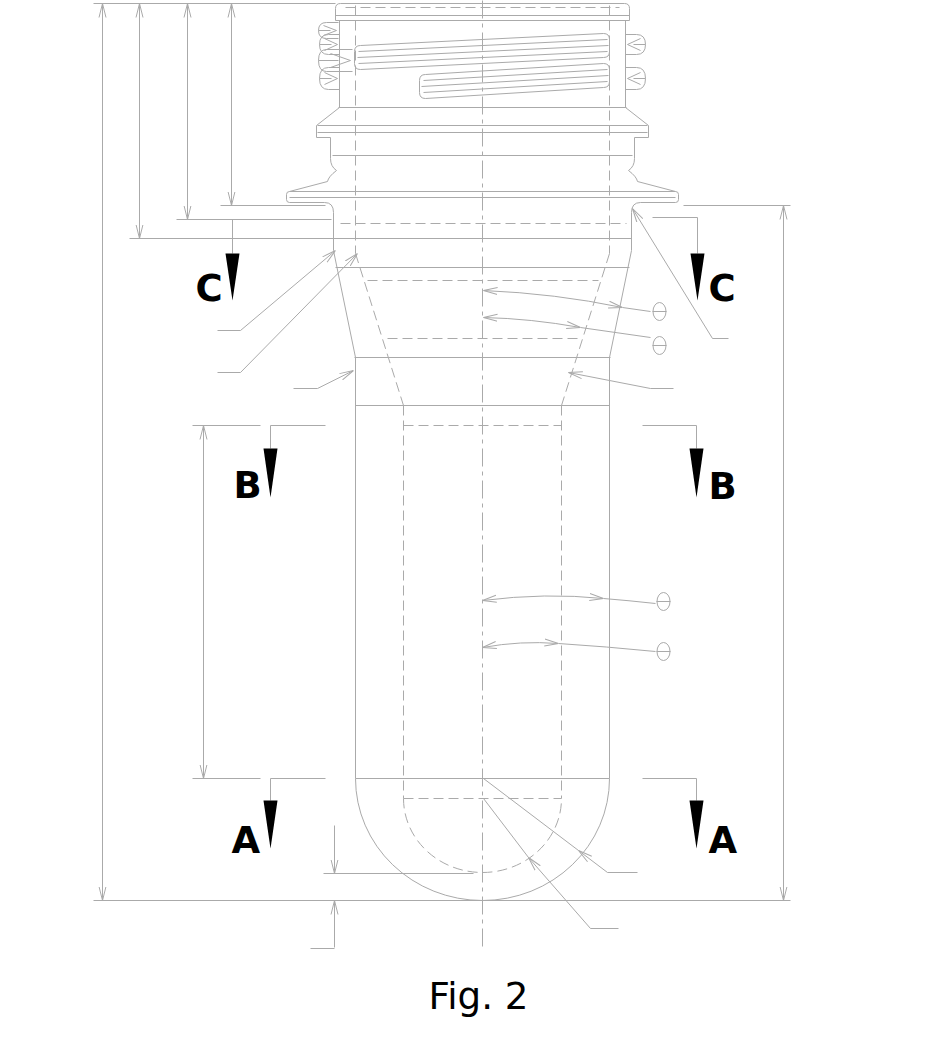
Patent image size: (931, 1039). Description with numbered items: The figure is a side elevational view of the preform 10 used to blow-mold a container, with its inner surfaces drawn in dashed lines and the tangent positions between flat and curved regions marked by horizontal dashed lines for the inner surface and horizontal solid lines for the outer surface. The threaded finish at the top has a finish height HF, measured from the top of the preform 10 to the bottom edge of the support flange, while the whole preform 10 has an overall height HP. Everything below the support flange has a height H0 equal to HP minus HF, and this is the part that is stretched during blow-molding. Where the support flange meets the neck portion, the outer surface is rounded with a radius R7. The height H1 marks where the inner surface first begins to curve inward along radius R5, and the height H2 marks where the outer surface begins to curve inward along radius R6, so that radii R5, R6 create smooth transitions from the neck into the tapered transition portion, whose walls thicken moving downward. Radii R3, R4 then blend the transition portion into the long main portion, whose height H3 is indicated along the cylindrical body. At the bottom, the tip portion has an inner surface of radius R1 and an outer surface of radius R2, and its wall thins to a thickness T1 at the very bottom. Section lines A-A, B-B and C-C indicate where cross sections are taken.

The preform 10 is at (685, 122).
The overall height HP is at (110, 452).
The height H2 is at (147, 121).
The height H1 is at (195, 112).
The finish height HF is at (238, 105).
The height of portion below support flange H0 is at (792, 553).
The height H3 is at (211, 602).
The wall thickness at bottom of tip portion T1 is at (372, 899).
The inner radius of curvature of tip portion R1 is at (572, 876).
The outer radius of curvature of tip portion R2 is at (579, 836).
The radius R3 is at (642, 391).
The radius R4 is at (301, 391).
The radius R5 is at (268, 325).
The radius R6 is at (257, 302).
The radius R7 is at (700, 286).